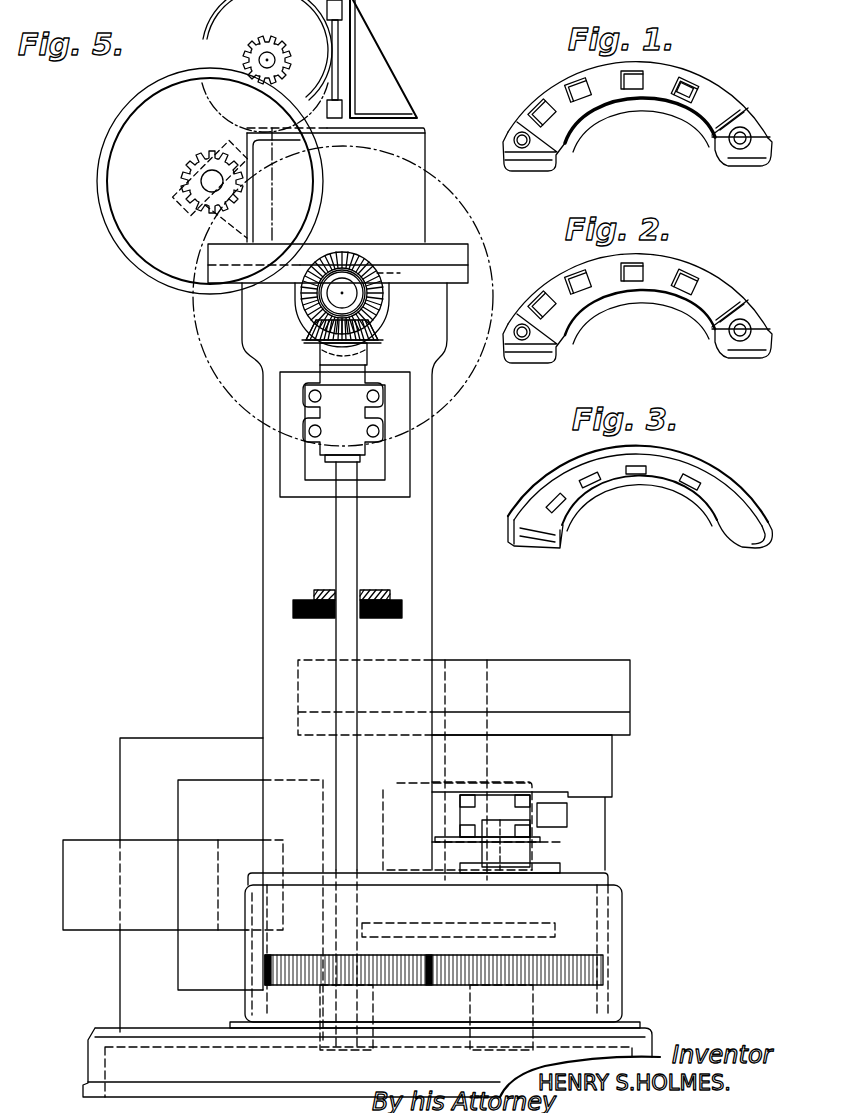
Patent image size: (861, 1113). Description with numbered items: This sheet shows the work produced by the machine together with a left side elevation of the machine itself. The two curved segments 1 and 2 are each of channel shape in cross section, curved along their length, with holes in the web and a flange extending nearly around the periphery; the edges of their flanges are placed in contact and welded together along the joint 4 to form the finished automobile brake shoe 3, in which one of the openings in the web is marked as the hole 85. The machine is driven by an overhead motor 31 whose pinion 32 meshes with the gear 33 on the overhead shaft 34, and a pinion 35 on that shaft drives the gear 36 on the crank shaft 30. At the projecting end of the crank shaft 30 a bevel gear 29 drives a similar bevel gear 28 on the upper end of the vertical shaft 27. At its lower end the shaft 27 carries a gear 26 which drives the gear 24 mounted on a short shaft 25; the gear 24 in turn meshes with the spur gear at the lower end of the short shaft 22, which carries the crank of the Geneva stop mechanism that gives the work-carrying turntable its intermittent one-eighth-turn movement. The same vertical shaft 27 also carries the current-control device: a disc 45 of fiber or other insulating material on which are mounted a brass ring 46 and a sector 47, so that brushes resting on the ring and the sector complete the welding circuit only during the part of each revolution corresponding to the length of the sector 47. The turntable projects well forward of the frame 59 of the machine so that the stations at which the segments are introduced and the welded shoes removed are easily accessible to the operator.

In FIG. 2, the segment 1 is at (717, 283).
In FIG. 3, the segment 2 is at (715, 492).
In FIG. 1, the brake shoe 3 is at (722, 94).
In FIG. 1, the joint 4 is at (700, 120).
In FIG. 1, the slot in shoe 85 is at (688, 84).
In FIG. 5, the short shaft 22 is at (513, 800).
In FIG. 5, the gear 24 is at (605, 968).
In FIG. 5, the short shaft 25 is at (516, 854).
In FIG. 5, the gear 26 is at (298, 988).
In FIG. 5, the shaft 27 is at (348, 523).
In FIG. 5, the bevel gear 28 is at (386, 331).
In FIG. 5, the bevel gear 29 is at (384, 303).
In FIG. 5, the crank shaft 30 is at (342, 292).
In FIG. 5, the motor 31 is at (225, 30).
In FIG. 5, the pinion 32 is at (268, 46).
In FIG. 5, the gear 33 is at (143, 88).
In FIG. 5, the overhead shaft 34 is at (210, 181).
In FIG. 5, the pinion 35 is at (200, 158).
In FIG. 5, the gear 36 is at (194, 304).
In FIG. 5, the disc 45 is at (297, 613).
In FIG. 5, the brass ring 46 is at (316, 590).
In FIG. 5, the sector 47 is at (373, 590).
In FIG. 5, the frame 59 is at (420, 611).